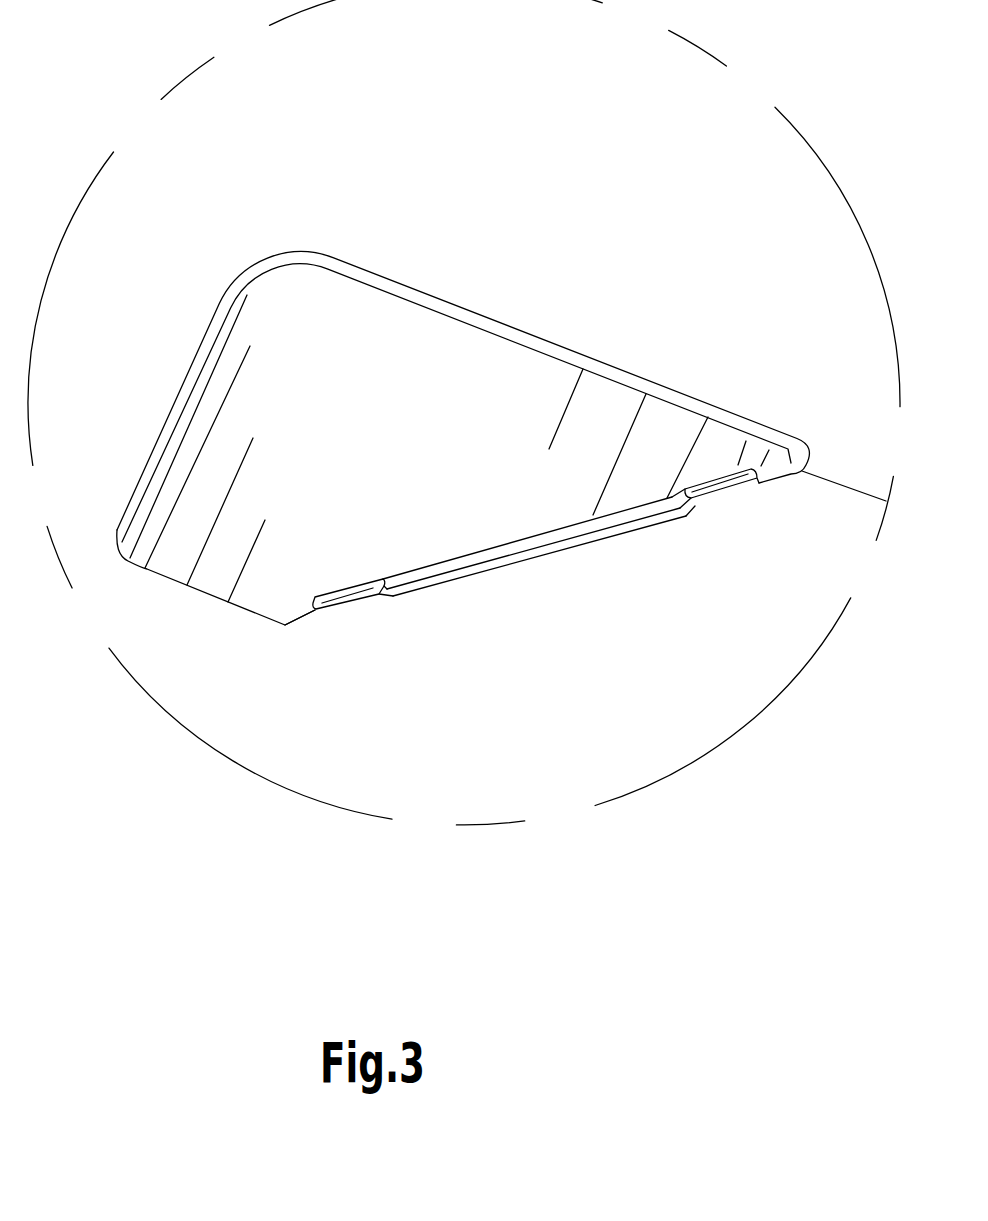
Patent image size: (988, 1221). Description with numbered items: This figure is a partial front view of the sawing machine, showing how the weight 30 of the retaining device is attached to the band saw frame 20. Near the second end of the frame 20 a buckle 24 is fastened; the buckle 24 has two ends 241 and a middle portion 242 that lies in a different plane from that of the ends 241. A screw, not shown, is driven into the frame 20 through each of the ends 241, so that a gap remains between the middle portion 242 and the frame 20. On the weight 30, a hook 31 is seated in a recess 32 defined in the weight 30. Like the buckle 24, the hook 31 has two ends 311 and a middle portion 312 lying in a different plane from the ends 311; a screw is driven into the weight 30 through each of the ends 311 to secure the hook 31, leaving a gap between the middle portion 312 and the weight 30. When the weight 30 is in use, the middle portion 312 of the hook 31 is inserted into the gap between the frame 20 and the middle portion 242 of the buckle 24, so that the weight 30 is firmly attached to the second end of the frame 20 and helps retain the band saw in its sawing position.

The frame 20 is at (829, 481).
The buckle 24 is at (725, 410).
The ends 241 is at (750, 472).
The middle portion 242 is at (673, 492).
The weight 30 is at (371, 308).
The hook 31 is at (347, 755).
The ends 311 is at (313, 616).
The middle portion 312 is at (417, 592).
The recess 32 is at (285, 625).